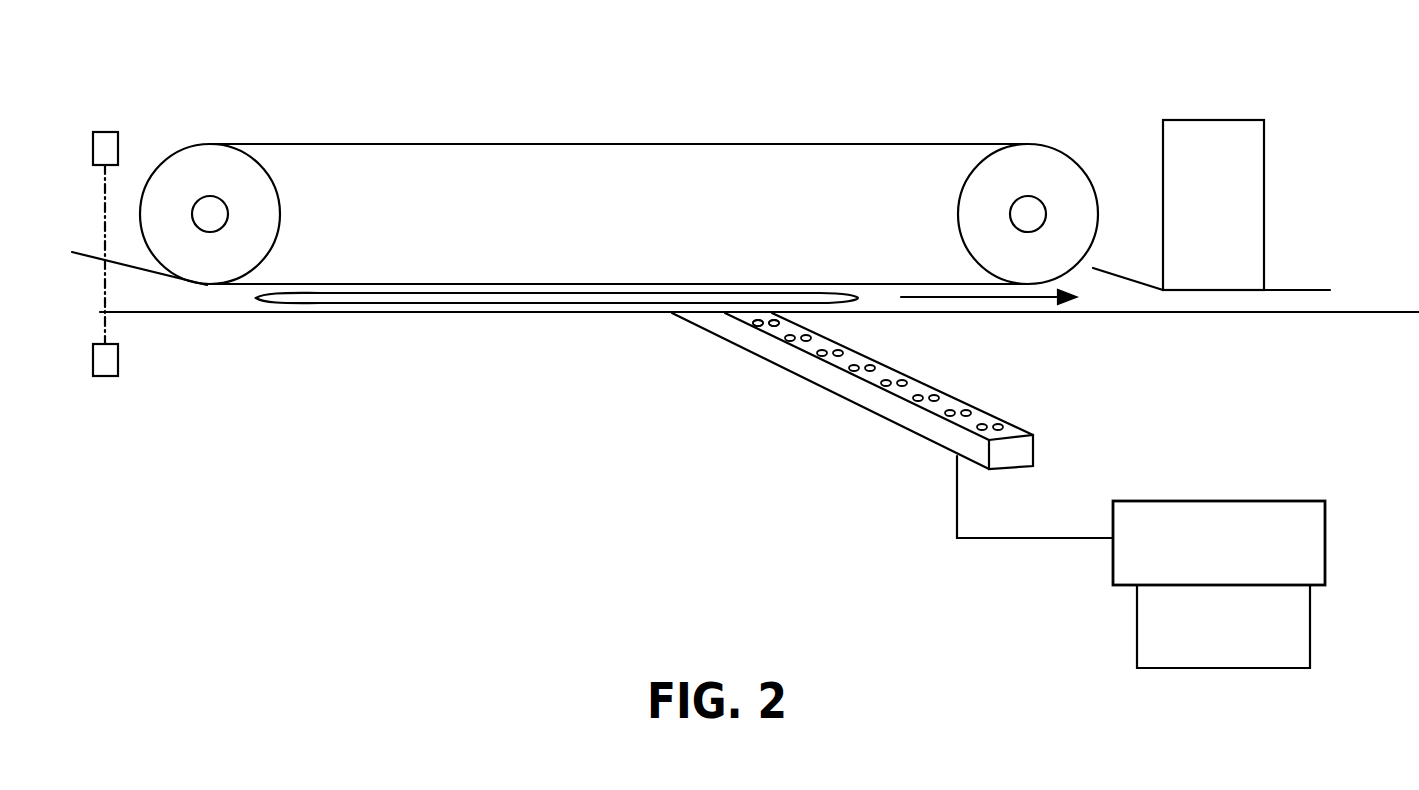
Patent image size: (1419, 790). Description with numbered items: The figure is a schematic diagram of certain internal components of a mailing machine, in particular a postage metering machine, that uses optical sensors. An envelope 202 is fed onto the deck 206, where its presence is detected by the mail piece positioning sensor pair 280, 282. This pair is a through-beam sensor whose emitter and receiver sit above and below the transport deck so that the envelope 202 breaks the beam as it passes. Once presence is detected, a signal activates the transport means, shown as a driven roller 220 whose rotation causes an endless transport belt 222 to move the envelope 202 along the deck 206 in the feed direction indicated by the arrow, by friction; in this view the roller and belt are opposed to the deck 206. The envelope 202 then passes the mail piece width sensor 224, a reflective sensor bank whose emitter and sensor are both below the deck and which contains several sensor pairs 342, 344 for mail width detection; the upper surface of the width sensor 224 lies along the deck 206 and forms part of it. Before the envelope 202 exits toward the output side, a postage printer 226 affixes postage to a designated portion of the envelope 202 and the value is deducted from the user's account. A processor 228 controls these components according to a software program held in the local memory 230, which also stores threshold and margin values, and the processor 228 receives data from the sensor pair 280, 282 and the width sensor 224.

The envelope 202 is at (660, 298).
The deck 206 is at (1412, 312).
The driven roller 220 is at (192, 170).
The endless transport belt 222 is at (468, 142).
The mail piece width sensor 224 is at (834, 407).
The postage printer 226 is at (1217, 120).
The processor 228 is at (1260, 501).
The local memory 230 is at (1262, 668).
The mail piece positioning sensor 280 is at (112, 132).
The mail piece positioning sensor 282 is at (108, 376).
The sensor pair 342 is at (758, 326).
The sensor pair 344 is at (777, 318).